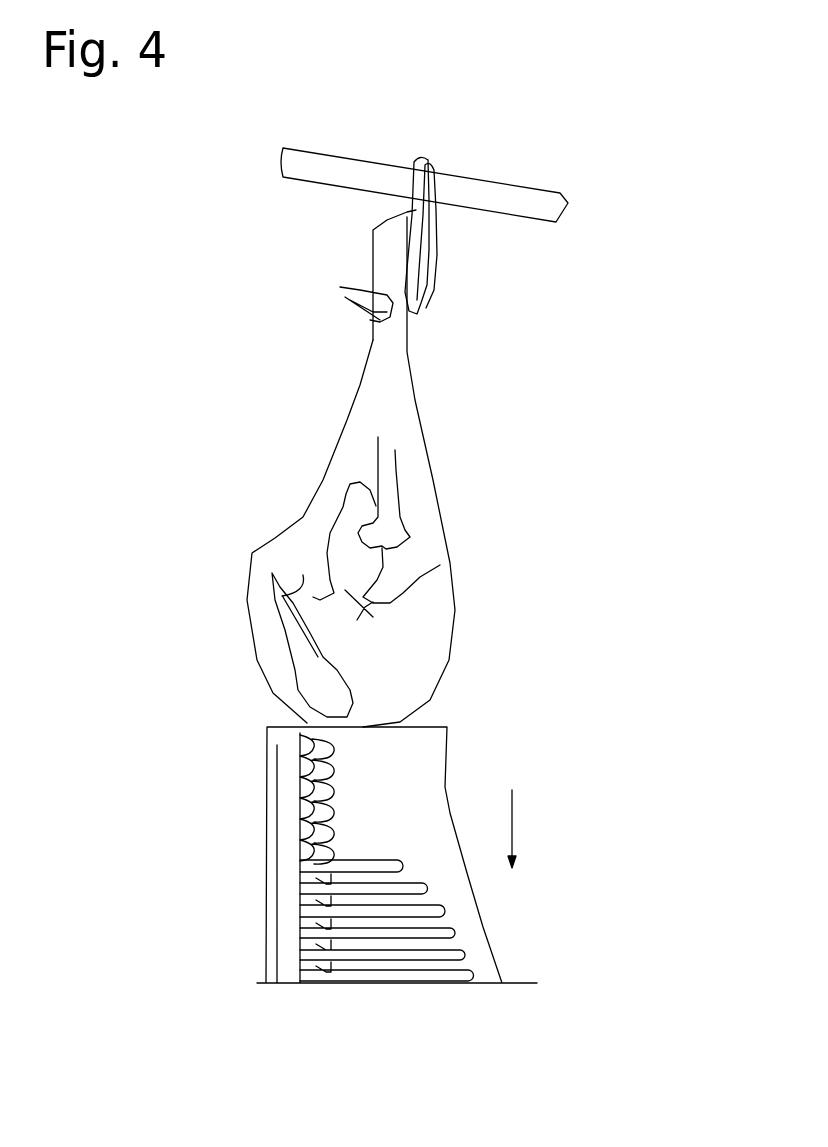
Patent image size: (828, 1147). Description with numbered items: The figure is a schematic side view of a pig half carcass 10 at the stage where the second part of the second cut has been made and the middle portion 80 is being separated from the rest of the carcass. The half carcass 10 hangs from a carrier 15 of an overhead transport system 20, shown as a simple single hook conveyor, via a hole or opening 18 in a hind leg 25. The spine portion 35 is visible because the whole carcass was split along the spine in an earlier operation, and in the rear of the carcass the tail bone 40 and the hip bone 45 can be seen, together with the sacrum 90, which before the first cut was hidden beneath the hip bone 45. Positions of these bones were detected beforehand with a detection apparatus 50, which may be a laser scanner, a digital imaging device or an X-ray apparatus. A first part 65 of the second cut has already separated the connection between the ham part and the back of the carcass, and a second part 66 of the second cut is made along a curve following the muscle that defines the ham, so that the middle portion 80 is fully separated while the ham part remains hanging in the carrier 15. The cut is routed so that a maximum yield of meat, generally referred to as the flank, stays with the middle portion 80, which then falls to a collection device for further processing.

The pig half carcass 10 is at (637, 692).
The carrier 15 is at (436, 250).
The hole or opening 18 is at (378, 288).
The overhead transport system 20 is at (511, 200).
The hind leg 25 is at (383, 362).
The spine portion 35 is at (300, 838).
The tail bone 40 is at (303, 575).
The hip bone 45 is at (440, 565).
The detection apparatus 50 is at (297, 734).
The first part of a second cut 65 is at (268, 712).
The second part of the second cut 66 is at (432, 711).
The middle portion 80 is at (165, 730).
The sacrum 90 is at (308, 673).